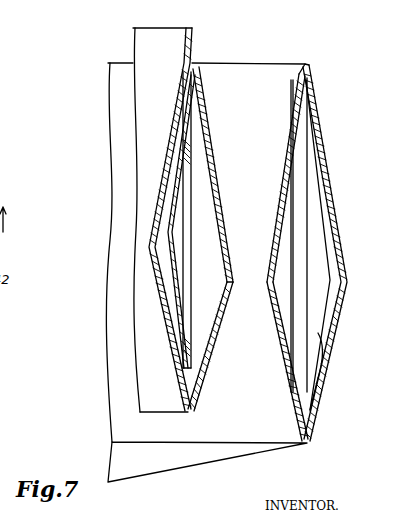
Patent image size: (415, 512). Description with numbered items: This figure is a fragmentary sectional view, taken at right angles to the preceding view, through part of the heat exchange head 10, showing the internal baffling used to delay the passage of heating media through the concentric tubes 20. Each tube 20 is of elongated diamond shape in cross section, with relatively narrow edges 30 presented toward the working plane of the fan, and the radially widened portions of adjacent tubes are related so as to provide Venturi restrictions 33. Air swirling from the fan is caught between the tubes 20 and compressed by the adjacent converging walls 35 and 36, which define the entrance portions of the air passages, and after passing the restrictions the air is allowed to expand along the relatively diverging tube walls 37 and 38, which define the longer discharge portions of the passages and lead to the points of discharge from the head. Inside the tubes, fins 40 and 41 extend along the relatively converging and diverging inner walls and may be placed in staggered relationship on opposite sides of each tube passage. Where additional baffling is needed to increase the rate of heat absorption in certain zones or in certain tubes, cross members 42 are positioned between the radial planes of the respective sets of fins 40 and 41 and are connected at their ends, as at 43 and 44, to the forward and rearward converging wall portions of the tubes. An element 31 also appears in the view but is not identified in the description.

The heat exchange head 10 is at (330, 220).
The concentric tubes 20 is at (197, 385).
The relatively narrow edges 30 is at (190, 413).
The top edge 31 is at (190, 63).
The Venturi restrictions 33 is at (260, 282).
The adjacent wall 35 is at (208, 348).
The adjacent wall 36 is at (292, 360).
The diverging tube wall 37 is at (205, 137).
The diverging tube wall 38 is at (292, 145).
The fin 40 is at (317, 185).
The fin 41 is at (168, 195).
The cross member 42 is at (188, 208).
The connection point 43 is at (192, 370).
The connection point 44 is at (188, 90).